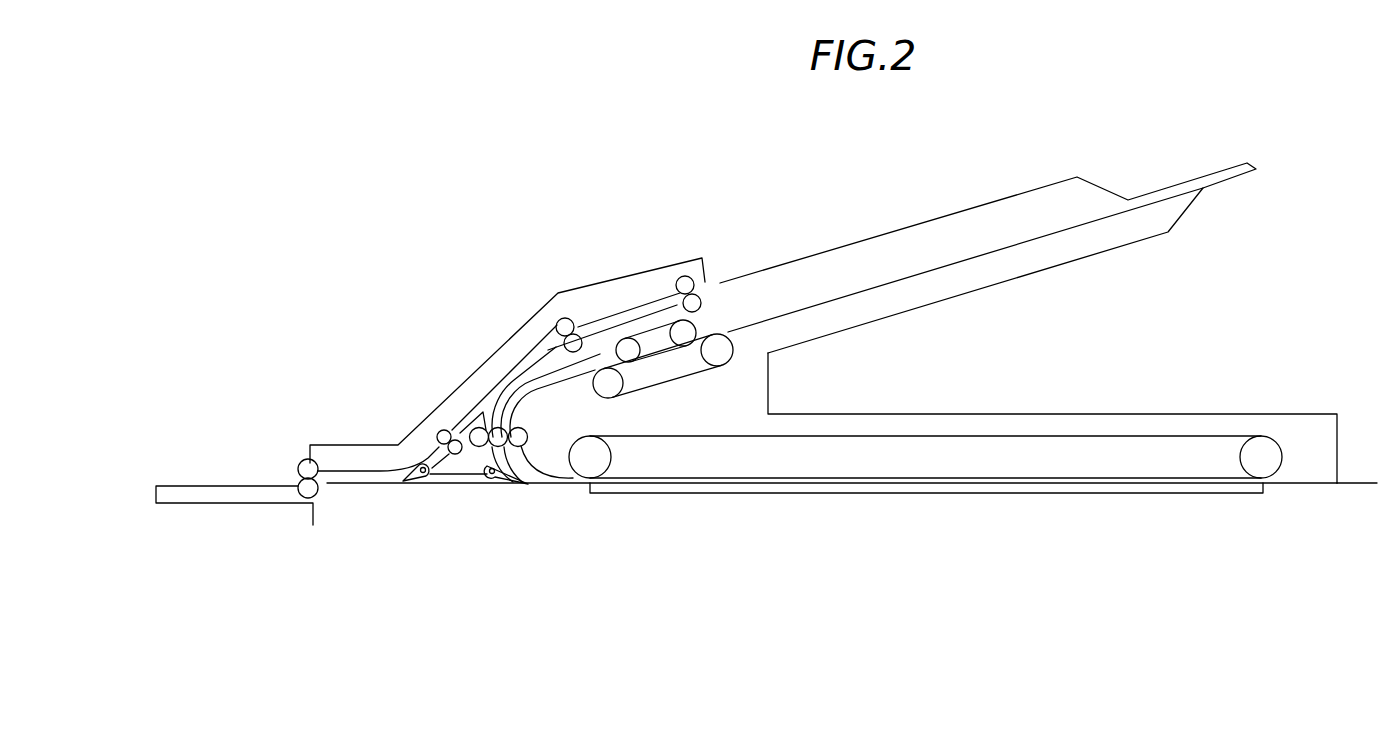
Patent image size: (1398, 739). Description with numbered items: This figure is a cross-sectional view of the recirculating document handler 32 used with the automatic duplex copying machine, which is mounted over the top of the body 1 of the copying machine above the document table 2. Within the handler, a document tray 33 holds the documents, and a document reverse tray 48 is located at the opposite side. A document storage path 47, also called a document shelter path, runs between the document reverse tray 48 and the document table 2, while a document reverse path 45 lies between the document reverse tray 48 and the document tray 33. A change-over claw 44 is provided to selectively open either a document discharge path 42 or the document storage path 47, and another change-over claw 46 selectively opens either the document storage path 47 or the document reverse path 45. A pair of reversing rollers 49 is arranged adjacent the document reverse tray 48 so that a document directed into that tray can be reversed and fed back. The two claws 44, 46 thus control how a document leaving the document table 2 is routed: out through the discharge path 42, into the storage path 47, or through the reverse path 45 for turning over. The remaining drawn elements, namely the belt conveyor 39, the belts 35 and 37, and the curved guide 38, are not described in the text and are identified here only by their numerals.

The body 1 is at (1377, 480).
The document table 2 is at (1220, 496).
The recirculating document handler 32 is at (952, 340).
The document tray 33 is at (985, 253).
The feed belt 35 is at (677, 380).
The separation belt 37 is at (658, 327).
The curved guide path 38 is at (532, 382).
The conveyor belt 39 is at (998, 436).
The document discharge path 42 is at (602, 320).
The change-over claw 44 is at (500, 483).
The document reverse path 45 is at (422, 460).
The change-over claw 46 is at (413, 485).
The document storage path 47 is at (427, 481).
The document reverse tray 48 is at (248, 504).
The reversing rollers 49 is at (298, 480).